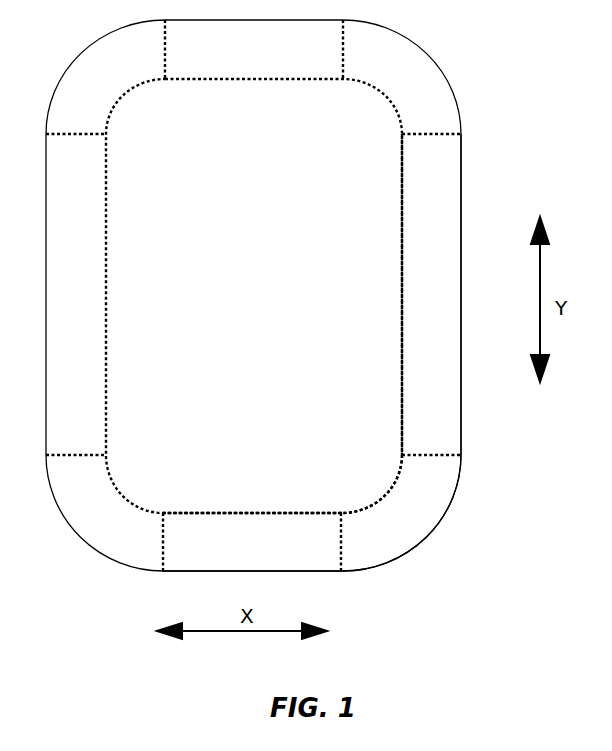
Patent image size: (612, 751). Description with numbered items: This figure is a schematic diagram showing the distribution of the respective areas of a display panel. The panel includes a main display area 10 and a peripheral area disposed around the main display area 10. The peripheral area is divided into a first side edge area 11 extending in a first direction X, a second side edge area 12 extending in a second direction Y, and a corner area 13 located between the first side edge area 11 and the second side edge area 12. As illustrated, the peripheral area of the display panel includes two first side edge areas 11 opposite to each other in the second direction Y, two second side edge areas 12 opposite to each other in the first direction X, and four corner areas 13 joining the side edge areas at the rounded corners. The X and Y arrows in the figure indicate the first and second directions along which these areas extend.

The main display area 10 is at (142, 478).
The first side edge area 11 is at (290, 547).
The second side edge area 12 is at (438, 416).
The corner area 13 is at (412, 513).